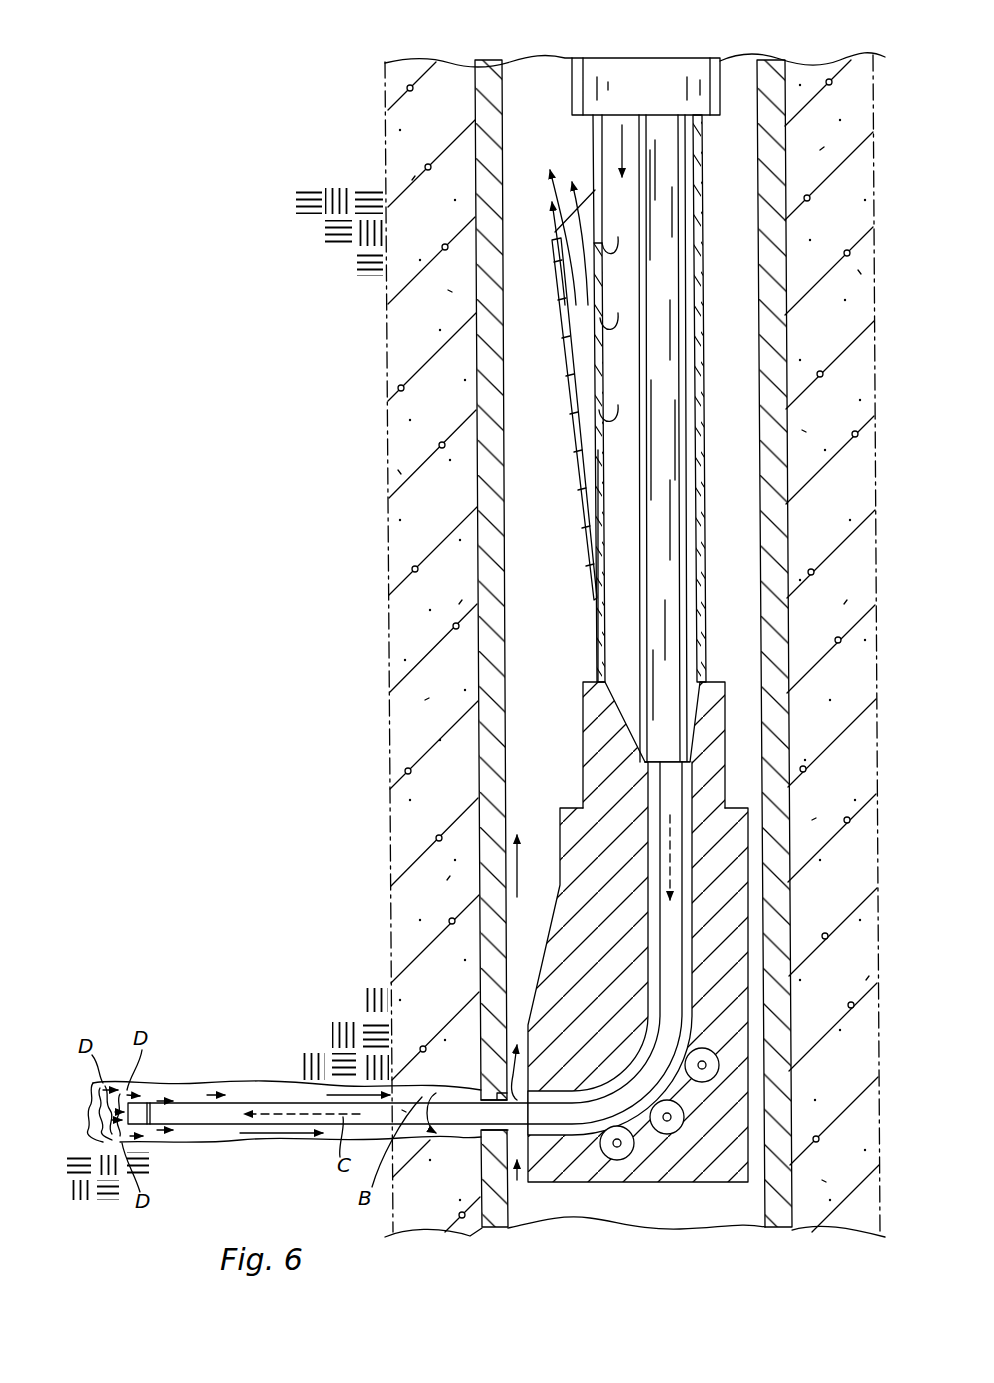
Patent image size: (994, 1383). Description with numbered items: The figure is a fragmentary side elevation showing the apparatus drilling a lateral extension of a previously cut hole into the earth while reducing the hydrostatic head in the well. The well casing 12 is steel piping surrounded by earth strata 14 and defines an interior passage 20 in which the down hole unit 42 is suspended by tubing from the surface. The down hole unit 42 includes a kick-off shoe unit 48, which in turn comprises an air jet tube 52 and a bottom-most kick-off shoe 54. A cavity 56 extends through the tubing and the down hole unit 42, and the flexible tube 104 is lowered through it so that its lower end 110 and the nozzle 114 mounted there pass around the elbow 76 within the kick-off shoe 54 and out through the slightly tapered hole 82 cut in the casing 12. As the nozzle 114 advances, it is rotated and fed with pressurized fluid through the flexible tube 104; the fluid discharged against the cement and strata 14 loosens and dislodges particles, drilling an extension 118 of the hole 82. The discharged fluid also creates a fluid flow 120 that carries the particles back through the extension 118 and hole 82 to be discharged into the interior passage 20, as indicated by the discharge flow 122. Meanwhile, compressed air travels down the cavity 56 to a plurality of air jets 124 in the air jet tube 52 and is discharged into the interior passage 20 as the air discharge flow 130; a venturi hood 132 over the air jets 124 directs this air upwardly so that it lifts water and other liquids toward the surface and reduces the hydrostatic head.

The well casing 12 is at (477, 683).
The earth strata 14 is at (105, 1202).
The interior passage 20 is at (535, 527).
The down hole unit 42 is at (600, 54).
The kick-off shoe unit 48 is at (704, 143).
The air jet tube 52 is at (704, 215).
The kick-off shoe 54 is at (583, 722).
The cavity 56 is at (623, 632).
The elbow 76 is at (643, 1027).
The hole 82 is at (483, 1090).
The flexible tube 104 is at (658, 812).
The lower end 110 is at (190, 1127).
The nozzle 114 is at (110, 1140).
The extension 118 is at (232, 1100).
The fluid flow 120 is at (188, 1082).
The discharge flow 122 is at (518, 1160).
The air jets 124 is at (603, 263).
The air discharge flow 130 is at (562, 185).
The venturi hood 132 is at (565, 360).